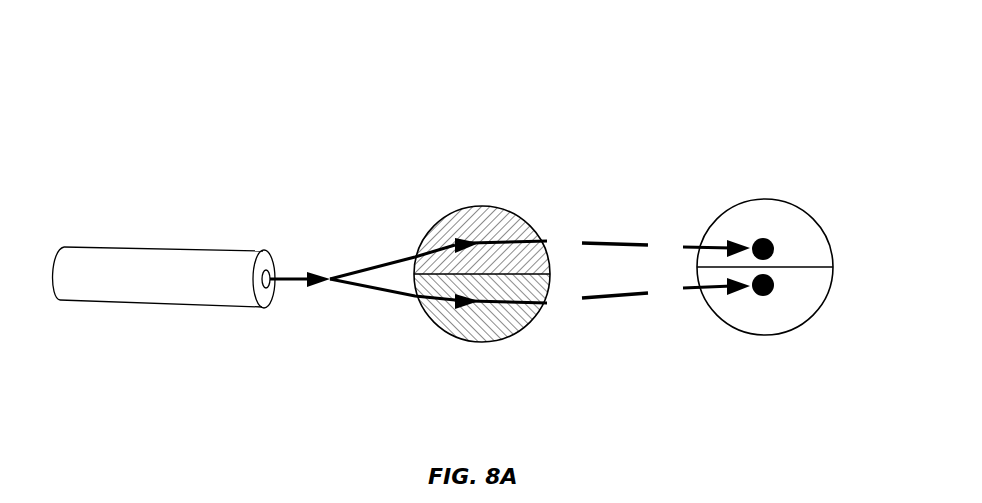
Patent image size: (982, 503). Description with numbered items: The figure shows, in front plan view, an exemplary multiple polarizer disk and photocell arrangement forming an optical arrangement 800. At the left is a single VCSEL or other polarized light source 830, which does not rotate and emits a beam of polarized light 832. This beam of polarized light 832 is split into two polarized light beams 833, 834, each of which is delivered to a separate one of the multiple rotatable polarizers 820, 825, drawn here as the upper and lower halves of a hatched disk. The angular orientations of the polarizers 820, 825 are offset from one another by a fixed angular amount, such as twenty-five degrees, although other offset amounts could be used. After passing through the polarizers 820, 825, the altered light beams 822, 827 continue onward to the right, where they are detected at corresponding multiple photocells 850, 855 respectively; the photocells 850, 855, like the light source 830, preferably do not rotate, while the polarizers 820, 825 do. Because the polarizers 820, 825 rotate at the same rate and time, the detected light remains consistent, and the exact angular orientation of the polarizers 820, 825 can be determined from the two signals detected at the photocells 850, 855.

The optical arrangement 800 is at (685, 62).
The rotatable polarizer 820 is at (526, 213).
The altered light beam 822 is at (592, 242).
The rotatable polarizer 825 is at (518, 333).
The altered light beam 827 is at (622, 298).
The polarized light source 830 is at (167, 301).
The beam of polarized light 832 is at (288, 284).
The polarized light beam 833 is at (377, 261).
The polarized light beam 834 is at (380, 293).
The photocell 850 is at (775, 240).
The photocell 855 is at (775, 285).